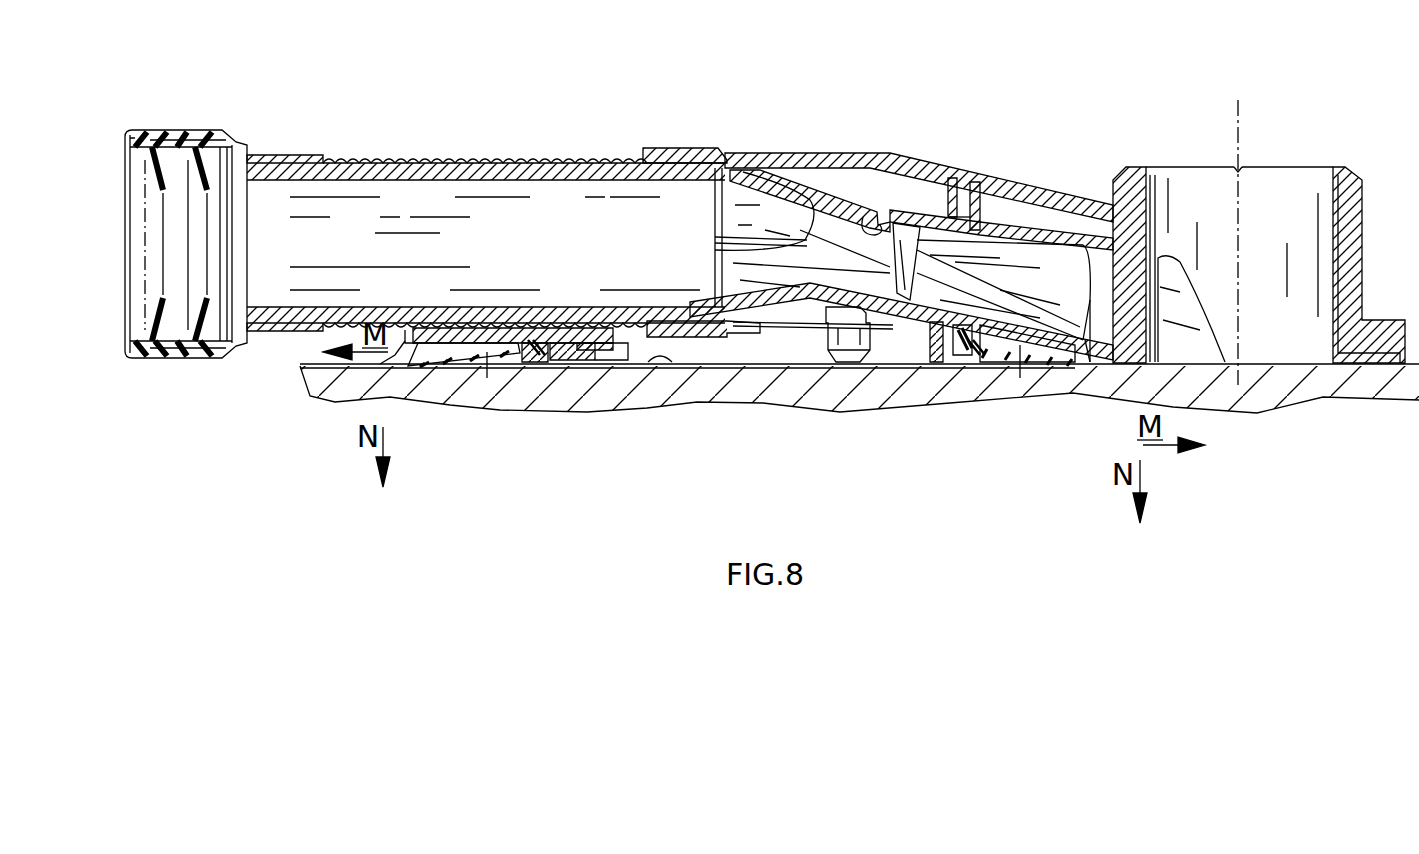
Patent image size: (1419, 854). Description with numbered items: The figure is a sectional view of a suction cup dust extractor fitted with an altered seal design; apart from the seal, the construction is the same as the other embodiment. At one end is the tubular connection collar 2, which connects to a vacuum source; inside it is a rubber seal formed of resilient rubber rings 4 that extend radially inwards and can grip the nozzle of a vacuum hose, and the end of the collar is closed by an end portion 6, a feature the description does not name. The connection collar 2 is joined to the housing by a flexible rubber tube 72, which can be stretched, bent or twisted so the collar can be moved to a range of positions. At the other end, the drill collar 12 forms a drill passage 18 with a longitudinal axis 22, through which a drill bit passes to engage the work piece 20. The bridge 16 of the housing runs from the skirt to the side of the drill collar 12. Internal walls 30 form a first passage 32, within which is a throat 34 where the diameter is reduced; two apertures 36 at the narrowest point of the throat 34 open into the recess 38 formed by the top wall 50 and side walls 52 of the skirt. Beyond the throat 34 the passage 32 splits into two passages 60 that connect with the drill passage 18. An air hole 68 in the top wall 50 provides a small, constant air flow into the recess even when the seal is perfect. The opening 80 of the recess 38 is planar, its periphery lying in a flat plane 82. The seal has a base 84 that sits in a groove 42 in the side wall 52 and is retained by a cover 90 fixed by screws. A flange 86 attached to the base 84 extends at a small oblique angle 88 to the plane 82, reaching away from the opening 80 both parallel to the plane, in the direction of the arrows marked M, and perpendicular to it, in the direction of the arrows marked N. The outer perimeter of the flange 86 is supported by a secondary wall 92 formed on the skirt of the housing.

The connection collar 2 is at (188, 130).
The rubber seal rings 4 is at (200, 186).
The end cap 6 is at (136, 134).
The drill collar 12 is at (1133, 178).
The bridge 16 is at (827, 157).
The drill passage 18 is at (1190, 210).
The work piece 20 is at (1290, 380).
The longitudinal axis 22 is at (1240, 232).
The internal walls 30 is at (790, 262).
The first passage 32 is at (786, 233).
The throat 34 is at (872, 222).
The apertures 36 is at (900, 300).
The recess 38 is at (819, 357).
The groove 42 is at (525, 350).
The top wall 50 is at (693, 327).
The side walls 52 is at (520, 347).
The two passages 60 is at (1178, 306).
The air hole 68 is at (607, 345).
The flexible tube 72 is at (468, 166).
The opening 80 is at (740, 306).
The plane 82 is at (662, 362).
The base 84 is at (530, 355).
The flange 86 is at (423, 363).
The angle 88 is at (487, 367).
The cover 90 is at (557, 357).
The secondary wall 92 is at (407, 353).